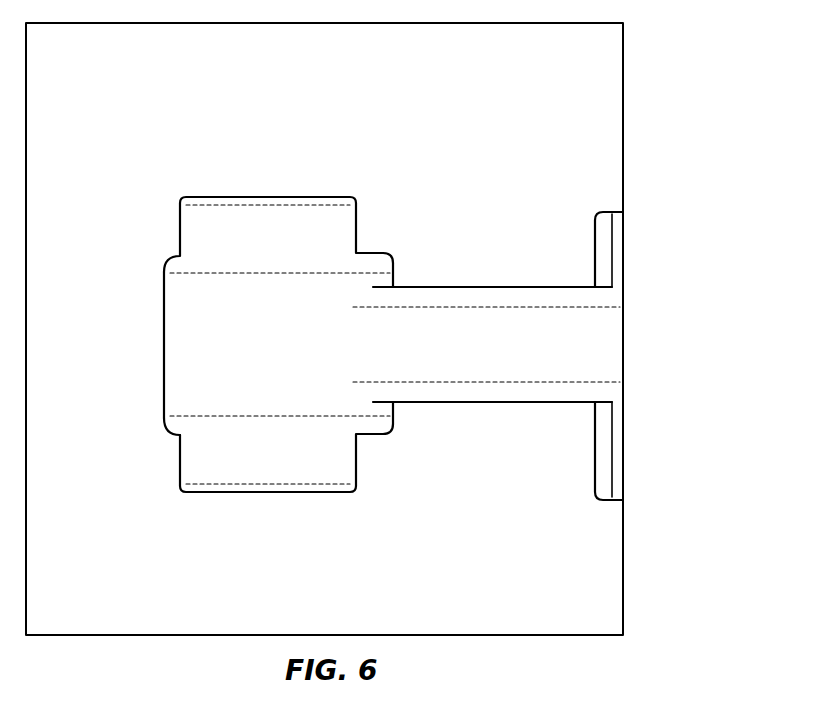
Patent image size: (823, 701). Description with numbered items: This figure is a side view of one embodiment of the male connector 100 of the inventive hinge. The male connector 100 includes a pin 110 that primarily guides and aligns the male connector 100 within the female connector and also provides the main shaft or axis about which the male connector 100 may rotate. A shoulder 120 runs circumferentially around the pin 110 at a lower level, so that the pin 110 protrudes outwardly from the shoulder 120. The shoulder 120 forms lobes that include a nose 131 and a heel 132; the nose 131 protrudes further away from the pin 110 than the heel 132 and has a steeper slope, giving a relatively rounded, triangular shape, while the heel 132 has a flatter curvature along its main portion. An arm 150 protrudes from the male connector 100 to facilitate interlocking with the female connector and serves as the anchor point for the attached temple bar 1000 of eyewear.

The male connector 100 is at (403, 138).
The pin 110 is at (265, 233).
The shoulder 120 is at (163, 242).
The nose 131 is at (372, 266).
The heel 132 is at (207, 340).
The arm 150 is at (547, 268).
The temple bar 1000 is at (646, 345).